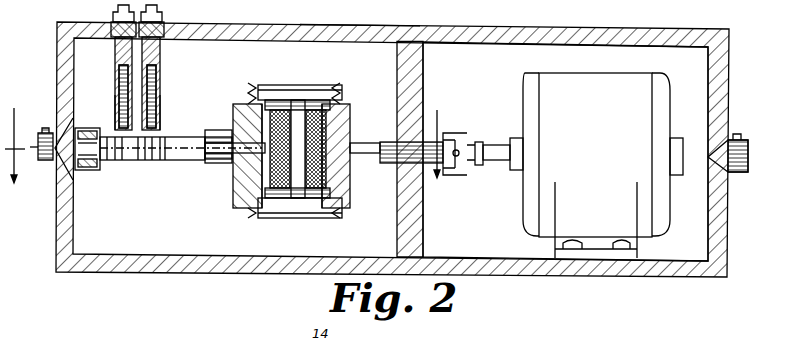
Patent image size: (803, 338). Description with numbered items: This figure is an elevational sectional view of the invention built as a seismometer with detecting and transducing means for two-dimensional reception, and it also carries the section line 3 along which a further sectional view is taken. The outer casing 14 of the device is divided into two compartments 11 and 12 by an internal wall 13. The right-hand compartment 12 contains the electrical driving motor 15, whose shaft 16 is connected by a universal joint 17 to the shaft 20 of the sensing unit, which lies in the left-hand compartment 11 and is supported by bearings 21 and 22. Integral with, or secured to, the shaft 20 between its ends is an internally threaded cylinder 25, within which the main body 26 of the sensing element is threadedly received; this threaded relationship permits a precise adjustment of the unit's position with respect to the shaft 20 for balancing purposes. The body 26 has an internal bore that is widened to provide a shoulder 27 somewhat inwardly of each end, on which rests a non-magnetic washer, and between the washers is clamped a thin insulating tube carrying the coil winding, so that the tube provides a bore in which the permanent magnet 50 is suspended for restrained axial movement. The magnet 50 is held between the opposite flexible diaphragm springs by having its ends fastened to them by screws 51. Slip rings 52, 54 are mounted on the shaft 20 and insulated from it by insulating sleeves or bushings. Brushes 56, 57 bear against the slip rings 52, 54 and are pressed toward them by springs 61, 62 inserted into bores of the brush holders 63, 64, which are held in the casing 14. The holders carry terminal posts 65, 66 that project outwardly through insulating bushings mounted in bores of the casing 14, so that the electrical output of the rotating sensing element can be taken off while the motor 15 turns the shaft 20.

The section line 3- 3 is at (225, 134).
The compartment 11 is at (228, 47).
The compartment 12 is at (565, 151).
The internal wall 13 is at (412, 71).
The outer casing 14 is at (332, 27).
The electrical driving motor 15 is at (596, 165).
The shaft 16 is at (497, 148).
The universal joint 17 is at (452, 137).
The shaft 20 is at (184, 156).
The bearing 21 is at (414, 177).
The bearing 22 is at (90, 170).
The internally threaded cylinder 25 is at (235, 196).
The main body 26 is at (254, 88).
The shoulder 27 is at (234, 112).
The permanent magnet 50 is at (298, 149).
The screws 51 is at (297, 148).
The slip ring 52 is at (123, 159).
The slip ring 54 is at (150, 159).
The brush 56 is at (118, 108).
The brush 57 is at (158, 114).
The spring 61 is at (119, 75).
The spring 62 is at (156, 75).
The brush holder 63 is at (116, 50).
The brush holder 64 is at (158, 52).
The terminal post 65 is at (113, 12).
The terminal post 66 is at (163, 12).